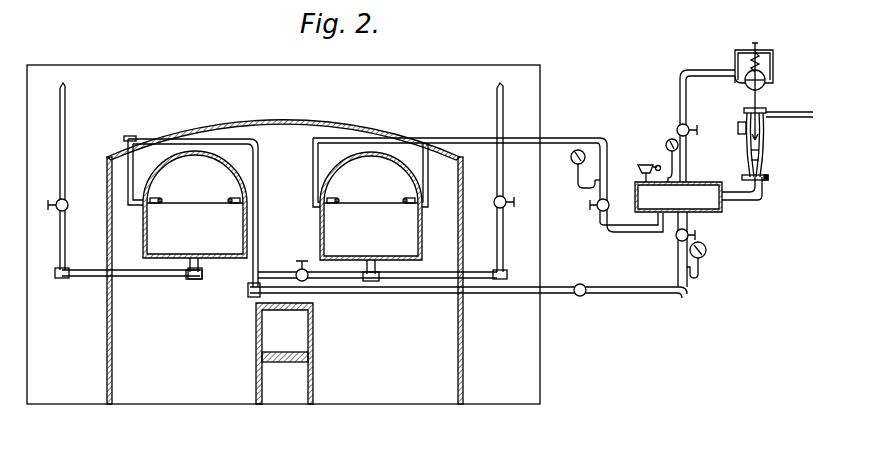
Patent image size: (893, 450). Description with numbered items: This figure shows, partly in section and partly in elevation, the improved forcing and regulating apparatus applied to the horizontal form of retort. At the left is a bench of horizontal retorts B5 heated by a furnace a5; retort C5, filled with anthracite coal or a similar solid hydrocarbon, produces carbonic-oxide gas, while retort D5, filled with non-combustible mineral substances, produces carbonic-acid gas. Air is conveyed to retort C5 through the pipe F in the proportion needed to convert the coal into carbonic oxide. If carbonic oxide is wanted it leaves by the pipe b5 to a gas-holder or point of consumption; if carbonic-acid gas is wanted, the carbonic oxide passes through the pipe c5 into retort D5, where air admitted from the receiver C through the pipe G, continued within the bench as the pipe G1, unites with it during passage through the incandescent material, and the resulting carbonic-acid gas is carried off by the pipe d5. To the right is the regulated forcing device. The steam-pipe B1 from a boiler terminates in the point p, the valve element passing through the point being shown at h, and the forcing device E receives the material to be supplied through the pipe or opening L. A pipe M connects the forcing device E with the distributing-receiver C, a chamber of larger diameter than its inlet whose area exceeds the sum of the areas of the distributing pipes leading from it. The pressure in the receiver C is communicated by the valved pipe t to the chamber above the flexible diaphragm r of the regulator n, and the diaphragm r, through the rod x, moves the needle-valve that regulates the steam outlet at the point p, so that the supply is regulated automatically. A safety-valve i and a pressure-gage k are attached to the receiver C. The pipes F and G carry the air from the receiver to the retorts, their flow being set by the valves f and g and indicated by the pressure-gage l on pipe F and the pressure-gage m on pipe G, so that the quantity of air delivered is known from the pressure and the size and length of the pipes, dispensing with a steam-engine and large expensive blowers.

The bench of horizontal retorts B5 is at (283, 225).
The furnace a5 is at (284, 353).
The retort for carbonic-acid gas D5 is at (195, 215).
The retort for carbonic-oxide gas C5 is at (371, 216).
The pipe c5 is at (310, 211).
The pipe G1 is at (393, 295).
The pipe b5 is at (503, 236).
The pipe d5 is at (60, 176).
The pipe F is at (636, 233).
The valve f is at (604, 205).
The pressure-gage l is at (570, 156).
The distributing-receiver C is at (678, 197).
The pipe M is at (735, 203).
The pipe with valve t is at (686, 124).
The pressure-gage k is at (666, 160).
The safety-valve i is at (646, 165).
The valve g is at (678, 238).
The pressure-gage m is at (704, 260).
The pipe G is at (686, 294).
The regulator n is at (760, 70).
The flexible diaphragm r is at (759, 91).
The rod x is at (749, 91).
The forcing device E is at (766, 165).
The steam-pipe B1 is at (789, 122).
The pipe or opening L is at (737, 126).
The part h is at (747, 148).
The point p is at (749, 157).